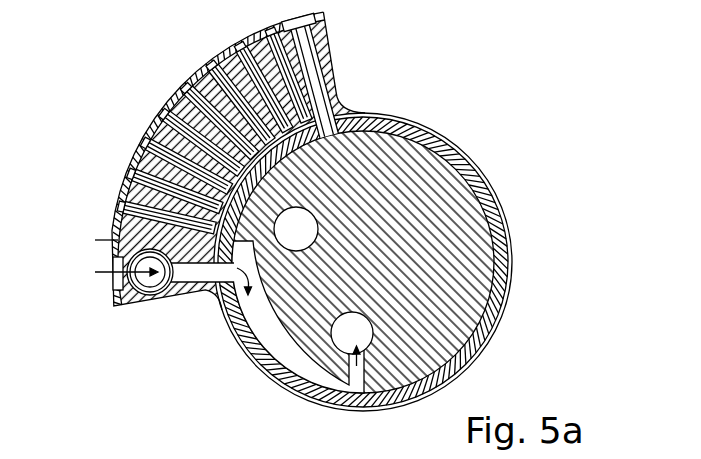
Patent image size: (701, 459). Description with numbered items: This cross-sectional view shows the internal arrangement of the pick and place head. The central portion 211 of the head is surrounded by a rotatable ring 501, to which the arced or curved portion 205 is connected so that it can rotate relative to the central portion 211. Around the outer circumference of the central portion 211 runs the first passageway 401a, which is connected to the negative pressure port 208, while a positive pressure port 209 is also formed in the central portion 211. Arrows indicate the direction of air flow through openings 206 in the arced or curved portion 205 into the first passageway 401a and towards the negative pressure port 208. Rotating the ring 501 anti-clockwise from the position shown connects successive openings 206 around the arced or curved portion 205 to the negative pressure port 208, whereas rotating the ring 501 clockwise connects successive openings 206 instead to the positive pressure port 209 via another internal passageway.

The arced or curved portion 205 is at (330, 65).
The openings 206 is at (125, 206).
The negative pressure port 208 is at (363, 325).
The positive pressure port 209 is at (305, 220).
The central portion 211 is at (413, 150).
The rotatable ring 501 is at (480, 175).
The first passageway 401a is at (272, 335).